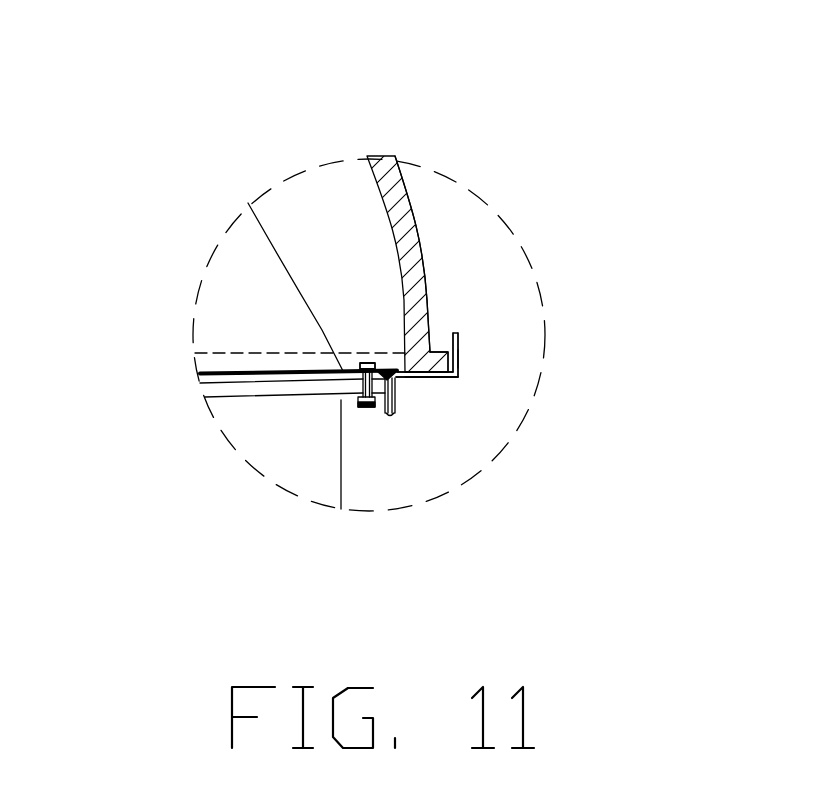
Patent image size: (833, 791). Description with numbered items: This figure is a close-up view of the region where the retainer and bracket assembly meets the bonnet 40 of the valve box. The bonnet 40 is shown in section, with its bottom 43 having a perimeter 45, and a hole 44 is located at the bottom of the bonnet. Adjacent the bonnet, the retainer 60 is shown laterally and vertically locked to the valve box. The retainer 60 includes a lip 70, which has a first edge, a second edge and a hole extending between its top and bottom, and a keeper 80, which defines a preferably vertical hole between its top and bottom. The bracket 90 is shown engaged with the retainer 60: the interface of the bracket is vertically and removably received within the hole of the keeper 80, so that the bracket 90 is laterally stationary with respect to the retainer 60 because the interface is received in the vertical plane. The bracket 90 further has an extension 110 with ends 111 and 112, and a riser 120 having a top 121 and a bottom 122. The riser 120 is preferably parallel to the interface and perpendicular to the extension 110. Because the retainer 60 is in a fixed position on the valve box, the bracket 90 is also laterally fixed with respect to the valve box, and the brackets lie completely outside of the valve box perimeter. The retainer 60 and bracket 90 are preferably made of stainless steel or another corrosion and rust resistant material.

The bonnet 40 is at (548, 97).
The bottom of the bonnet 43 is at (420, 285).
The hole 44 is at (387, 368).
The perimeter 45 is at (441, 352).
The retainer 60 is at (377, 405).
The lip 70 is at (380, 368).
The keeper 80 is at (396, 400).
The bracket 90 is at (496, 364).
The extension 110 is at (433, 379).
The end of the extension 111 is at (416, 378).
The end of the extension 112 is at (453, 379).
The riser 120 is at (463, 352).
The top of the riser 121 is at (460, 333).
The bottom of the riser 122 is at (462, 366).